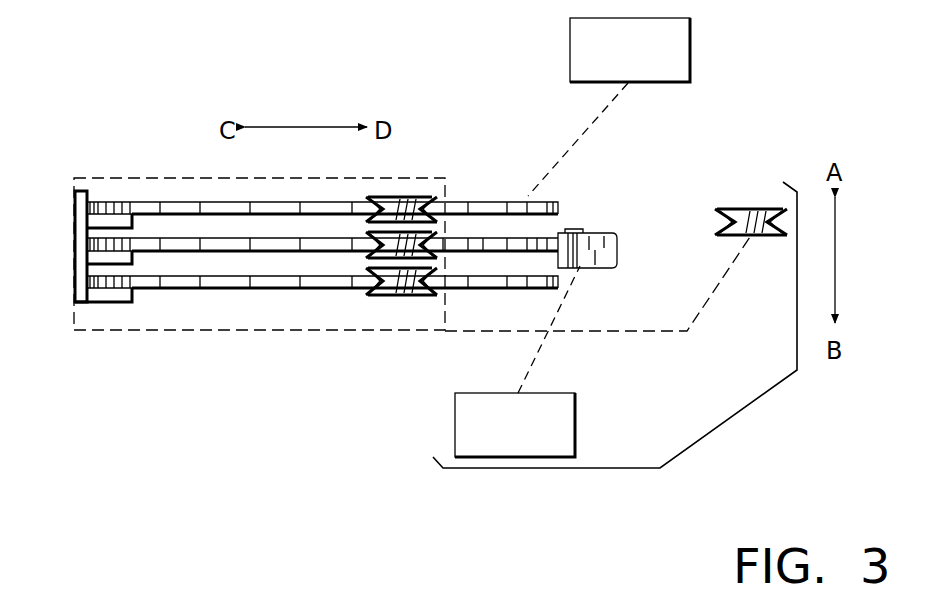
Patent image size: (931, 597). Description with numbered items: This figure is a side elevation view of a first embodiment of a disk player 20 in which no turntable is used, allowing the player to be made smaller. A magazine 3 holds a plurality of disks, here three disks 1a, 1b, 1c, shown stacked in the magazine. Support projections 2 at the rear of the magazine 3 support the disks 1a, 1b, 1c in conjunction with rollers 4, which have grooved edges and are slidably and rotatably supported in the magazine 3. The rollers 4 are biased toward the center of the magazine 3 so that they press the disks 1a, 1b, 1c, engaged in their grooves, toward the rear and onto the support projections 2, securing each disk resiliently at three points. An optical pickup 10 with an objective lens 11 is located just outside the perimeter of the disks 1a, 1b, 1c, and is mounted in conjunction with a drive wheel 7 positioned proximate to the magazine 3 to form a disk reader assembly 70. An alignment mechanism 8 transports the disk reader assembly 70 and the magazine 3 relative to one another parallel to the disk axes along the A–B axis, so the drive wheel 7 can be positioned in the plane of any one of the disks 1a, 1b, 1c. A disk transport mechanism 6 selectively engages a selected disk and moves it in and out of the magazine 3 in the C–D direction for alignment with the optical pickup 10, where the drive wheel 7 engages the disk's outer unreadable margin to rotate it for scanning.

The first disk 1a is at (460, 202).
The disk 1b is at (172, 255).
The disk 1c is at (247, 290).
The support projections 2 is at (110, 223).
The magazine 3 is at (328, 322).
The rollers 4 is at (395, 197).
The disk transport mechanism 6 is at (609, 107).
The drive wheel 7 is at (723, 210).
The alignment mechanism 8 is at (517, 361).
The optical pickup 10 is at (590, 270).
The objective lens 11 is at (573, 232).
The disk player 20 is at (408, 387).
The disk reader assembly 70 is at (708, 435).